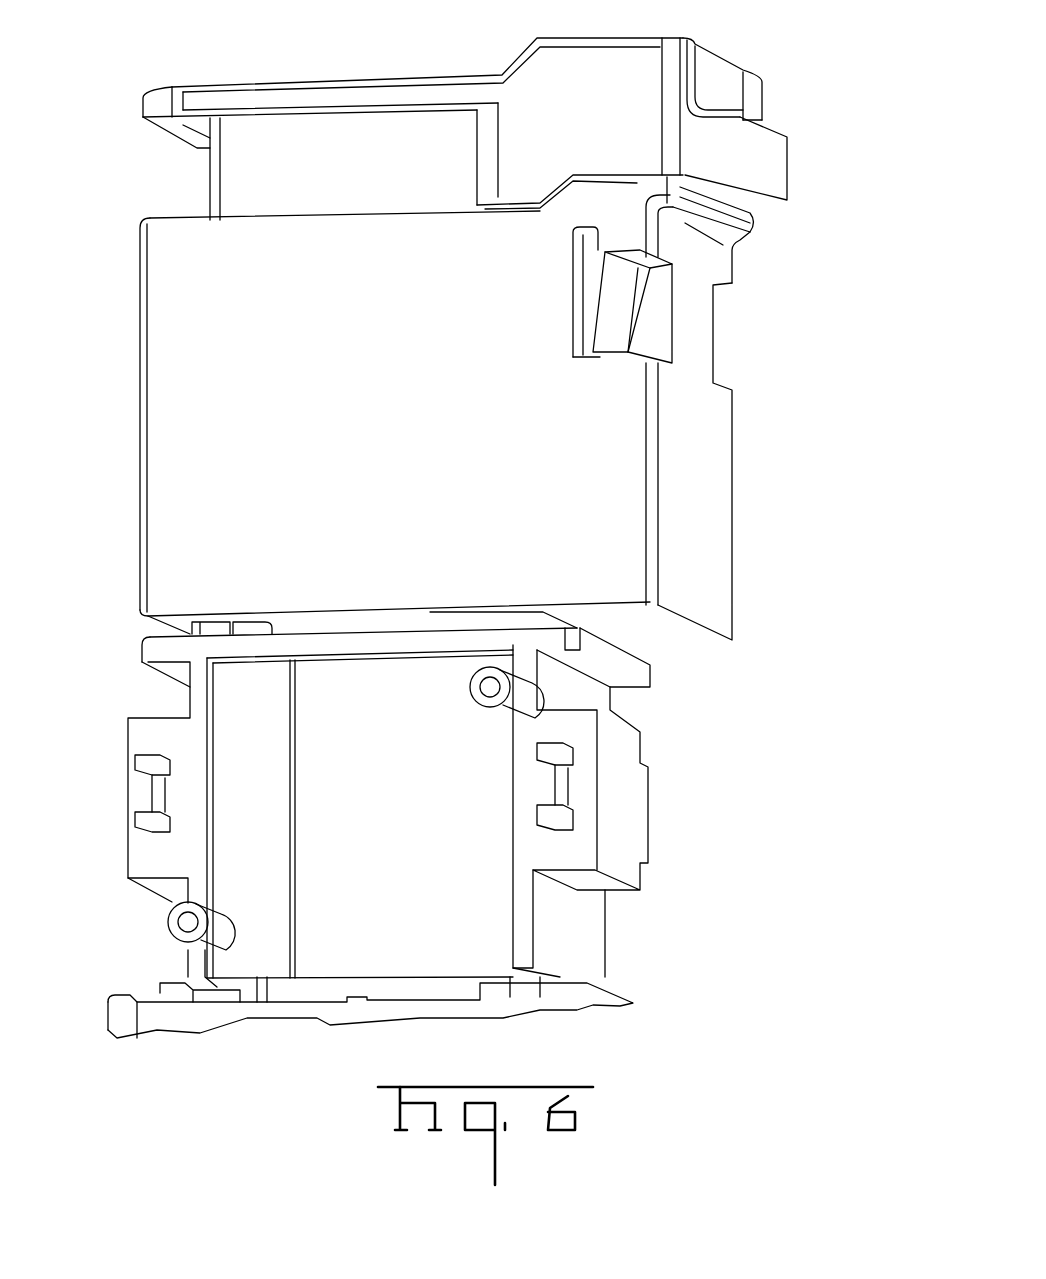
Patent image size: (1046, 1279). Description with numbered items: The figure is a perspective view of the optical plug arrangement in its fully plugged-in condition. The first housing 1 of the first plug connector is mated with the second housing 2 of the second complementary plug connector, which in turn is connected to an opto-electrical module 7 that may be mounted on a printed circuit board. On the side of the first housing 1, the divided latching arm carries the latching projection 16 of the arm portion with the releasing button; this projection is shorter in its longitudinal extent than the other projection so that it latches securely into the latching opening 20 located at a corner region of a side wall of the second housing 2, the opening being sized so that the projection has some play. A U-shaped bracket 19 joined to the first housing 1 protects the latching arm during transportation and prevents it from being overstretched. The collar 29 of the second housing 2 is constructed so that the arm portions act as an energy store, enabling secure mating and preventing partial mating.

The first housing 1 is at (300, 165).
The second housing 2 is at (573, 514).
The opto-electrical module 7 is at (405, 828).
The latching projection 16 is at (620, 312).
The U-shaped bracket 19 is at (768, 150).
The latching opening 20 is at (662, 343).
The collar 29 is at (618, 212).